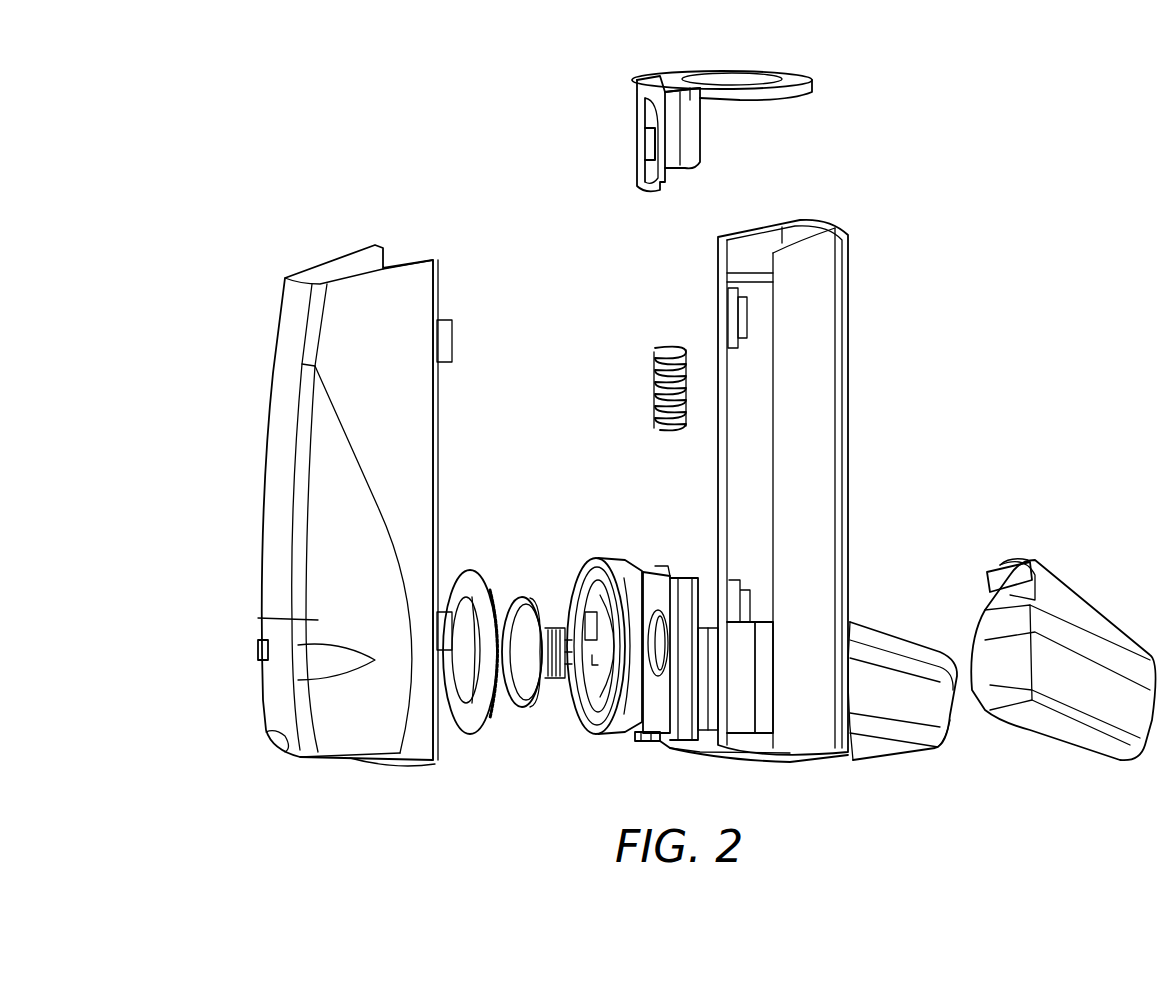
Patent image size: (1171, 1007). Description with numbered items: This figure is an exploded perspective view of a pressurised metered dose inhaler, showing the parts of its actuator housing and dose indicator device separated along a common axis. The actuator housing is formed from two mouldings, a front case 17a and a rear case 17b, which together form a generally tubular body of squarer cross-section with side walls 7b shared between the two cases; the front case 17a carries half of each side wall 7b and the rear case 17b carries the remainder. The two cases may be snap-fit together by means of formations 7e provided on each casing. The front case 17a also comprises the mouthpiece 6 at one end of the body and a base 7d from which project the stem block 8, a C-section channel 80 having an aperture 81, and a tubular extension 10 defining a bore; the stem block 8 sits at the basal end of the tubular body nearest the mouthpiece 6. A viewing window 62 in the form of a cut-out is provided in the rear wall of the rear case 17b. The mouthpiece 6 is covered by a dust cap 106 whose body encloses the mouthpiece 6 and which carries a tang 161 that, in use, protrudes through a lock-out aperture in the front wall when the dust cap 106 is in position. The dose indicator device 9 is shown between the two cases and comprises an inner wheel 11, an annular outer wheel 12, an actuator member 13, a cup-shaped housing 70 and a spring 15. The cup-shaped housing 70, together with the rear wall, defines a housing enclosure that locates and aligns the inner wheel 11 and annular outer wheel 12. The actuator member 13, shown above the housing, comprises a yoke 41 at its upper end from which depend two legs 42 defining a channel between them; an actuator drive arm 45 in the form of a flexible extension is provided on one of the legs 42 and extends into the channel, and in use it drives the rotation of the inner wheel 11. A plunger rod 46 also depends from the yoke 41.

The actuator member 13 is at (703, 115).
The yoke 41 is at (800, 78).
The legs 42 is at (637, 100).
The actuator drive arm 45 is at (648, 152).
The plunger rod 46 is at (696, 140).
The rear case 17b is at (320, 505).
The front case 17a is at (817, 487).
The side walls 7b is at (405, 268).
The formations 7e is at (455, 340).
The base 7d is at (713, 762).
The viewing window 62 is at (258, 651).
The annular outer wheel 12 is at (466, 566).
The inner wheel 11 is at (522, 592).
The dose indicator device 9 is at (540, 758).
The cup-shaped housing 70 is at (610, 562).
The aperture 81 is at (662, 612).
The C-section channel 80 is at (662, 742).
The tubular extension 10 is at (712, 658).
The stem block 8 is at (745, 700).
The spring 15 is at (644, 364).
The mouthpiece 6 is at (897, 760).
The dust cap 106 is at (1098, 768).
The tang 161 is at (992, 574).